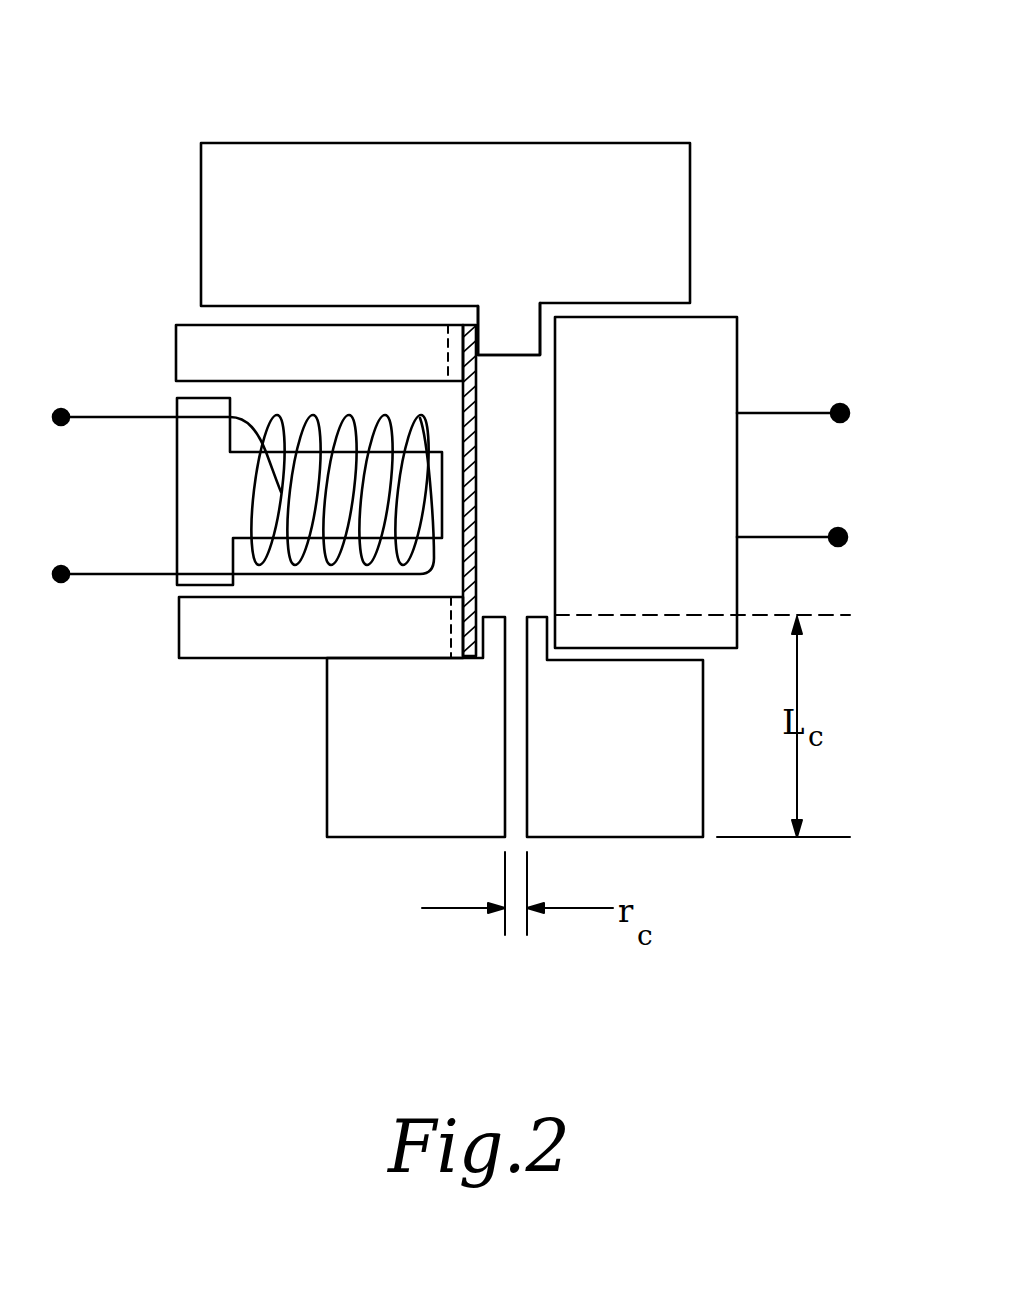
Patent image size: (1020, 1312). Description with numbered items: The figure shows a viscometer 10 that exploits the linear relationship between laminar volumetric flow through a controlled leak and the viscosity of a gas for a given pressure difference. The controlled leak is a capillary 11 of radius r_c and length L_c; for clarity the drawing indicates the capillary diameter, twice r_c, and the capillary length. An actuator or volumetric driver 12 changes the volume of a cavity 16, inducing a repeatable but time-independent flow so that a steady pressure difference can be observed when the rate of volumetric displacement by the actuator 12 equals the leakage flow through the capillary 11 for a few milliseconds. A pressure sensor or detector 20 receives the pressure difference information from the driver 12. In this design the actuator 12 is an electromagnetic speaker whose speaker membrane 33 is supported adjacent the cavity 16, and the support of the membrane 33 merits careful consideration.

The viscometer 10 is at (548, 76).
The capillary 11 is at (515, 772).
The actuator 12 is at (176, 406).
The cavity 16 is at (530, 425).
The pressure sensor 20 is at (737, 317).
The speaker membrane 33 is at (476, 490).